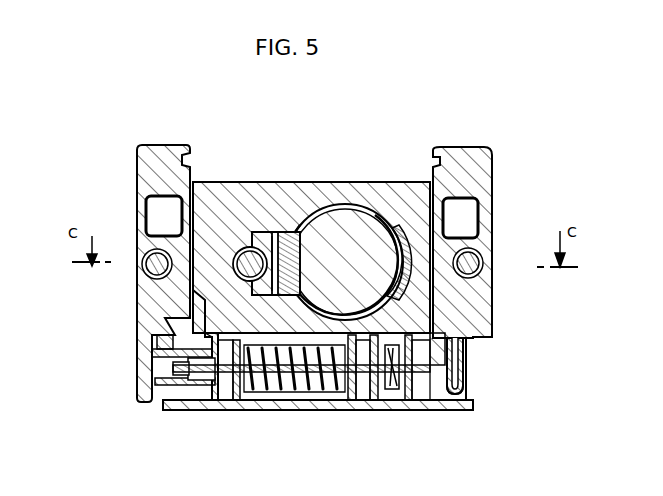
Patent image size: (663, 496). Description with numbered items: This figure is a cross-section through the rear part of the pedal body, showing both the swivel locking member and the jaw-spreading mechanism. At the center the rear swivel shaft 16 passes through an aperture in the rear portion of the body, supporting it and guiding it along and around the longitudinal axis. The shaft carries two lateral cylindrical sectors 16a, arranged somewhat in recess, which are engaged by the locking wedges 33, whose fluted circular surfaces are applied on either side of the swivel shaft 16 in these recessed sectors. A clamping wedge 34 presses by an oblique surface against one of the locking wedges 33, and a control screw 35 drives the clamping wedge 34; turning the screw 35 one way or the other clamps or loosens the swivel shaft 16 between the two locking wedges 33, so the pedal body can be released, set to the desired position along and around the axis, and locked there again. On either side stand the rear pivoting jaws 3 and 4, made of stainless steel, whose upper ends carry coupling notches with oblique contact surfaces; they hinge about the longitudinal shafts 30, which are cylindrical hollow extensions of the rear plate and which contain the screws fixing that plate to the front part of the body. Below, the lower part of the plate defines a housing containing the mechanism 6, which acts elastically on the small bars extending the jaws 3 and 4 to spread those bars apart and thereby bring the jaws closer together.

The rear pivoting jaw 3 is at (168, 150).
The rear pivoting jaw 4 is at (455, 186).
The mechanism 6 is at (312, 387).
The rear swivel shaft 16 is at (350, 217).
The lateral cylindrical sector 16a is at (385, 227).
The longitudinal shaft 30 is at (150, 281).
The locking wedge 33 is at (293, 230).
The clamping wedge 34 is at (262, 232).
The control screw 35 is at (240, 257).